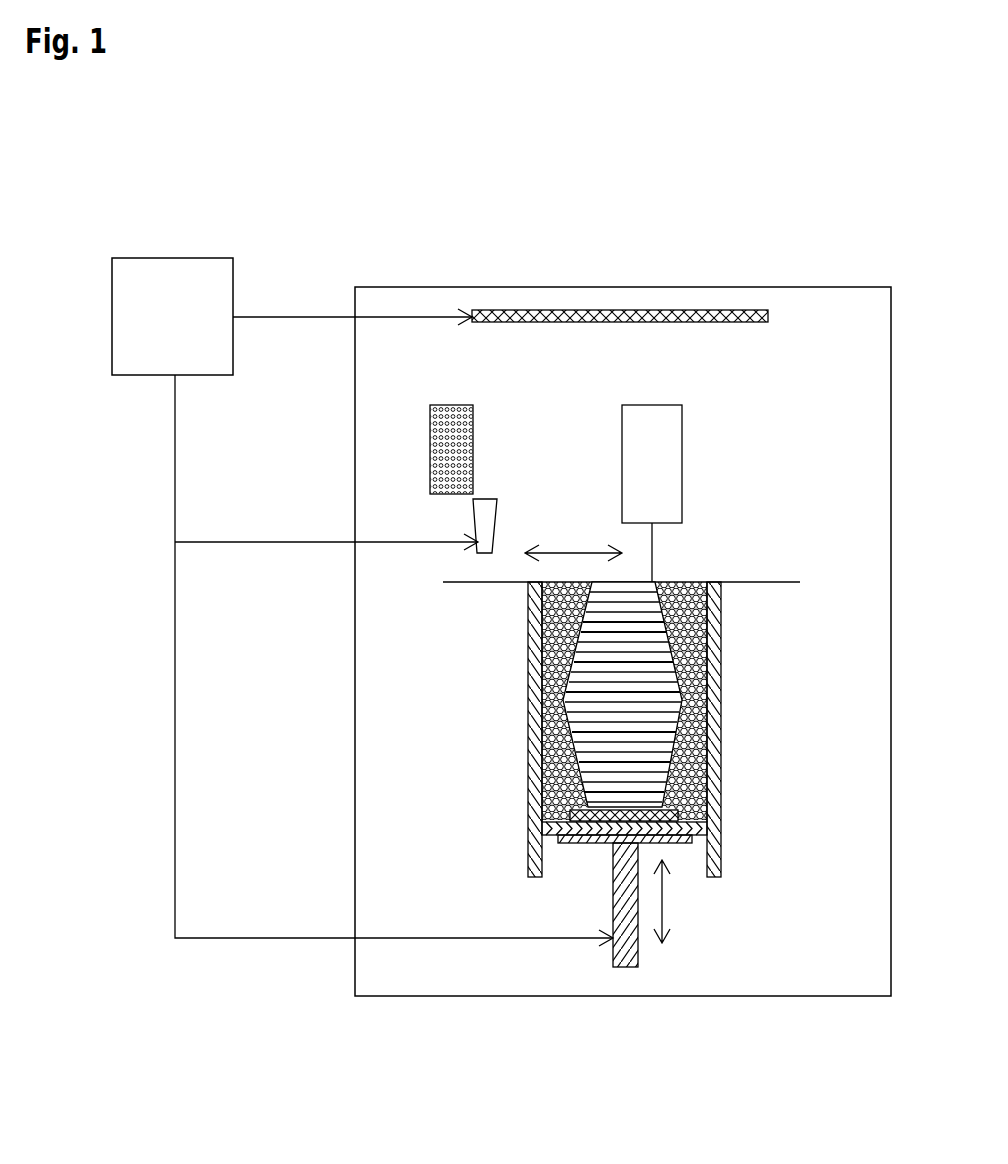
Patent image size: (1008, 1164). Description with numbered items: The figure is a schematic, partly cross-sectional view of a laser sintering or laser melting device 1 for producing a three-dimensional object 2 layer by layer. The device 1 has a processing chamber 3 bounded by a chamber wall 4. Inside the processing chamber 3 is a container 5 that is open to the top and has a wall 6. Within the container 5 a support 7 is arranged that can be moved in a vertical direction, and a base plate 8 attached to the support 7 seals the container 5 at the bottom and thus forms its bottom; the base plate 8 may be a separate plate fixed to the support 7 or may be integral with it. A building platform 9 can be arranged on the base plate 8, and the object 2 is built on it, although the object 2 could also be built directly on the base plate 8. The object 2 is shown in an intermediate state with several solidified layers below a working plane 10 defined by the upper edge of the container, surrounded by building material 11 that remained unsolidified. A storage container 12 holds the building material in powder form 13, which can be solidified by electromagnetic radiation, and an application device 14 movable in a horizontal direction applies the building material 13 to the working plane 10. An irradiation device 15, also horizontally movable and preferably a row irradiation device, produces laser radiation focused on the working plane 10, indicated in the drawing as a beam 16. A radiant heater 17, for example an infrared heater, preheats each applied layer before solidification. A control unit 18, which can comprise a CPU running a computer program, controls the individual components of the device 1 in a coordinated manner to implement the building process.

The device 1 is at (825, 258).
The object 2 is at (643, 640).
The processing chamber 3 is at (438, 713).
The chamber wall 4 is at (354, 405).
The container 5 is at (618, 729).
The wall 6 is at (719, 732).
The support 7 is at (602, 841).
The base plate 8 is at (560, 836).
The building platform 9 is at (552, 812).
The working plane 10 is at (753, 581).
The building material 11 is at (529, 627).
The storage container 12 is at (448, 405).
The building material in powder form 13 is at (473, 450).
The application device 14 is at (487, 523).
The irradiation device 15 is at (652, 487).
The beam 16 is at (657, 570).
The radiant heater 17 is at (733, 320).
The control unit 18 is at (362, 602).